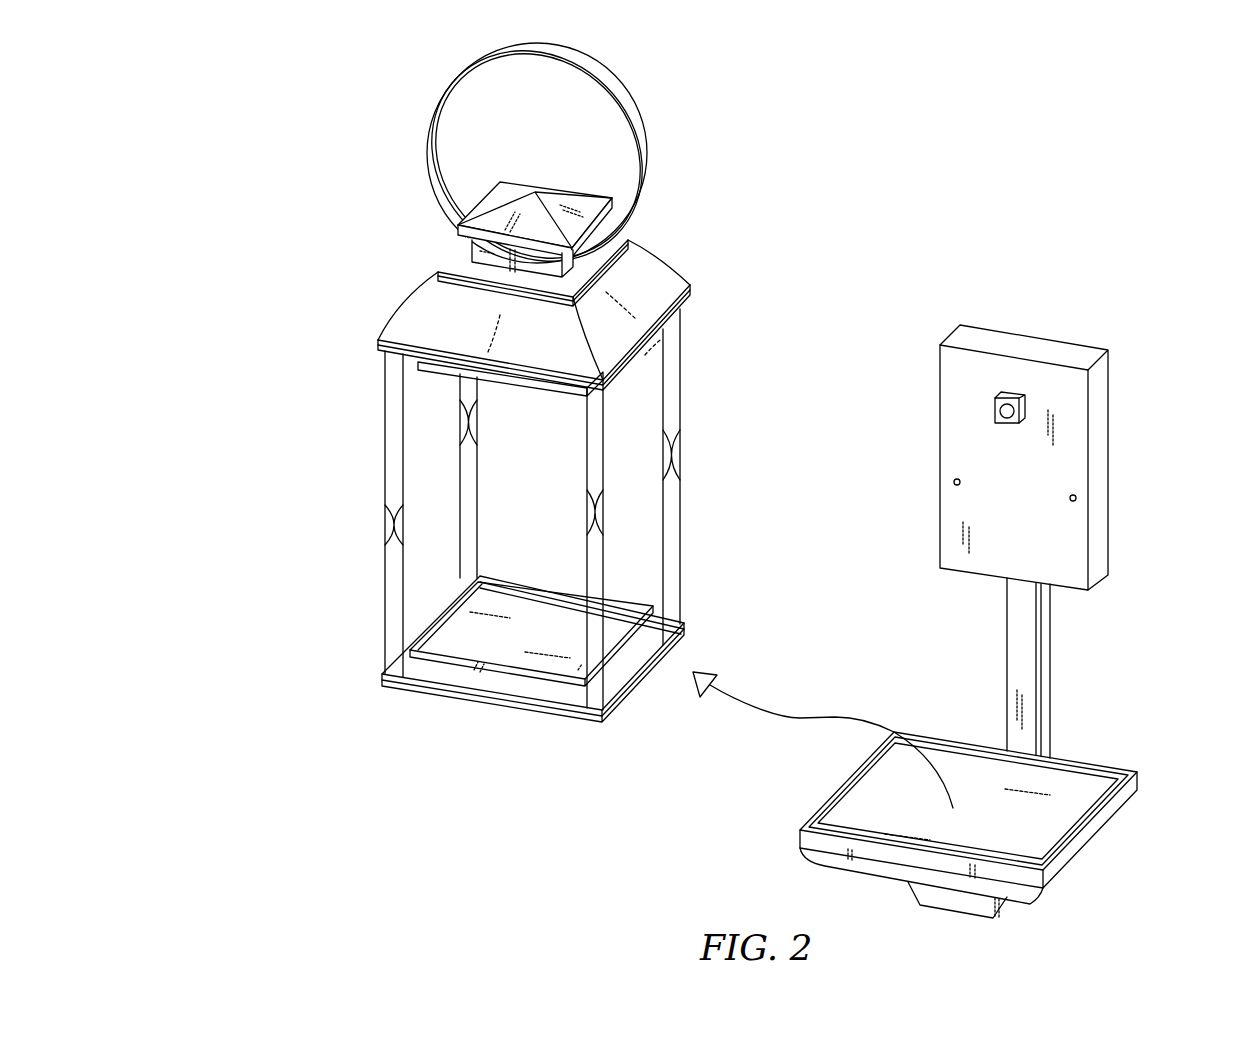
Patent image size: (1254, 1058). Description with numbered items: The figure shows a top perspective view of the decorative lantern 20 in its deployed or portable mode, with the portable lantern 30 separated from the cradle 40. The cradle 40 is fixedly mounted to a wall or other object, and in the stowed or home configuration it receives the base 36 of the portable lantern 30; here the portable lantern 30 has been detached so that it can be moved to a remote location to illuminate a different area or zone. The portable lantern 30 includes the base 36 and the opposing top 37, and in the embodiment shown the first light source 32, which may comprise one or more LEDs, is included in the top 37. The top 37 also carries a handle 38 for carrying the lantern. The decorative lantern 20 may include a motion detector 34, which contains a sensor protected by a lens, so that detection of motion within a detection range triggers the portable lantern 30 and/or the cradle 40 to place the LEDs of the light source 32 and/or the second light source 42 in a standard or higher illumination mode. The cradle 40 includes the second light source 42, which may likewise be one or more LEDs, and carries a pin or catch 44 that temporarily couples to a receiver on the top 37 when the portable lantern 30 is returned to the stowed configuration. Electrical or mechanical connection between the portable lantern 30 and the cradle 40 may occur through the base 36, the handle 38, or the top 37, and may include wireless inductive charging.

The decorative lantern 20 is at (247, 348).
The portable lantern 30 is at (335, 277).
The first light source 32 is at (503, 387).
The motion detector 34 is at (458, 248).
The base 36 is at (382, 678).
The top 37 is at (653, 280).
The handle 38 is at (636, 130).
The cradle 40 is at (1122, 665).
The second light source 42 is at (1020, 900).
The pin or catch 44 is at (1028, 408).